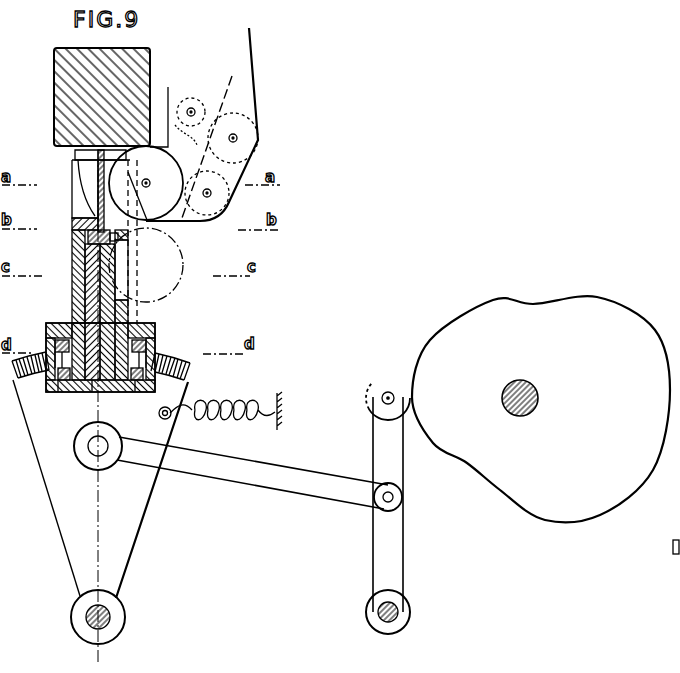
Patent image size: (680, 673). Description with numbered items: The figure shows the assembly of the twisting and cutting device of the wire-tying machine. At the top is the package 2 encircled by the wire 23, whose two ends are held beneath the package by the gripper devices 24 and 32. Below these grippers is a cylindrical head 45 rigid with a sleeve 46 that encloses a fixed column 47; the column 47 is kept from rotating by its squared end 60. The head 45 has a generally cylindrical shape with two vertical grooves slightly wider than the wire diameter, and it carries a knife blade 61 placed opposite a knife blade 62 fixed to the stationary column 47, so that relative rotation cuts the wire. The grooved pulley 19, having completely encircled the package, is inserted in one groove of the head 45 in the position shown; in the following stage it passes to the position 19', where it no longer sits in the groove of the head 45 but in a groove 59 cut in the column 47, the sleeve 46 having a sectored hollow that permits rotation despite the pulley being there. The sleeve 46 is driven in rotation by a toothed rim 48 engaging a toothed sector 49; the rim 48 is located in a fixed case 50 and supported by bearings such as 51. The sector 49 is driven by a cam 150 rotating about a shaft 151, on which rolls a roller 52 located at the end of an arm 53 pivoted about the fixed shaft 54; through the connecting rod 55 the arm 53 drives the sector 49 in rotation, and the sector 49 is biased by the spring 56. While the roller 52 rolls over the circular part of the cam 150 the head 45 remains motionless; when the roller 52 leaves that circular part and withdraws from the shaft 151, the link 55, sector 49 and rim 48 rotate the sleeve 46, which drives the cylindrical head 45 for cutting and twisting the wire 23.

The package 2 is at (150, 56).
The wire 23 is at (150, 76).
The gripper device 24 is at (85, 150).
The gripper device 32 is at (104, 151).
The cylindrical head 45 is at (80, 178).
The knife blade 61 is at (72, 213).
The knife blade 62 is at (88, 240).
The sleeve 46 is at (72, 263).
The fixed column 47 is at (88, 290).
The groove 59 is at (111, 275).
The grooved pulley 19 is at (147, 197).
The grooved pulley position 19' is at (160, 265).
The toothed rim 48 is at (148, 357).
The fixed case 50 is at (61, 392).
The squared end 60 is at (101, 392).
The bearing 51 is at (134, 392).
The toothed sector 49 is at (134, 527).
The connecting rod 55 is at (280, 484).
The spring 56 is at (228, 415).
The roller 52 is at (376, 376).
The arm 53 is at (403, 468).
The fixed shaft 54 is at (398, 614).
The cam 150 is at (552, 508).
The shaft 151 is at (535, 404).